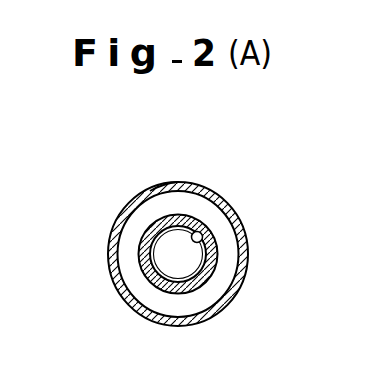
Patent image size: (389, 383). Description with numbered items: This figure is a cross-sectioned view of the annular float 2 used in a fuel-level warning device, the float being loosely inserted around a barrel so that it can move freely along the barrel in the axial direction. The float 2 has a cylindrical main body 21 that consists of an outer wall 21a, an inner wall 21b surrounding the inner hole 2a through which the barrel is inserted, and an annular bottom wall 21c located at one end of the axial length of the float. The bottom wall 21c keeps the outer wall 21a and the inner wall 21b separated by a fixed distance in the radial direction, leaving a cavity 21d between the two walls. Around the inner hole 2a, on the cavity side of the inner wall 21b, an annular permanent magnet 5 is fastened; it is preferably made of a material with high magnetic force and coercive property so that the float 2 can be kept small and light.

The annular float 2 is at (202, 173).
The inner hole 2a is at (167, 256).
The annular permanent magnet 5 is at (213, 265).
The cylindrical main body 21 is at (222, 310).
The outer wall 21a is at (138, 197).
The inner wall 21b is at (201, 233).
The annular bottom wall 21c is at (158, 300).
The cavity 21d is at (131, 231).